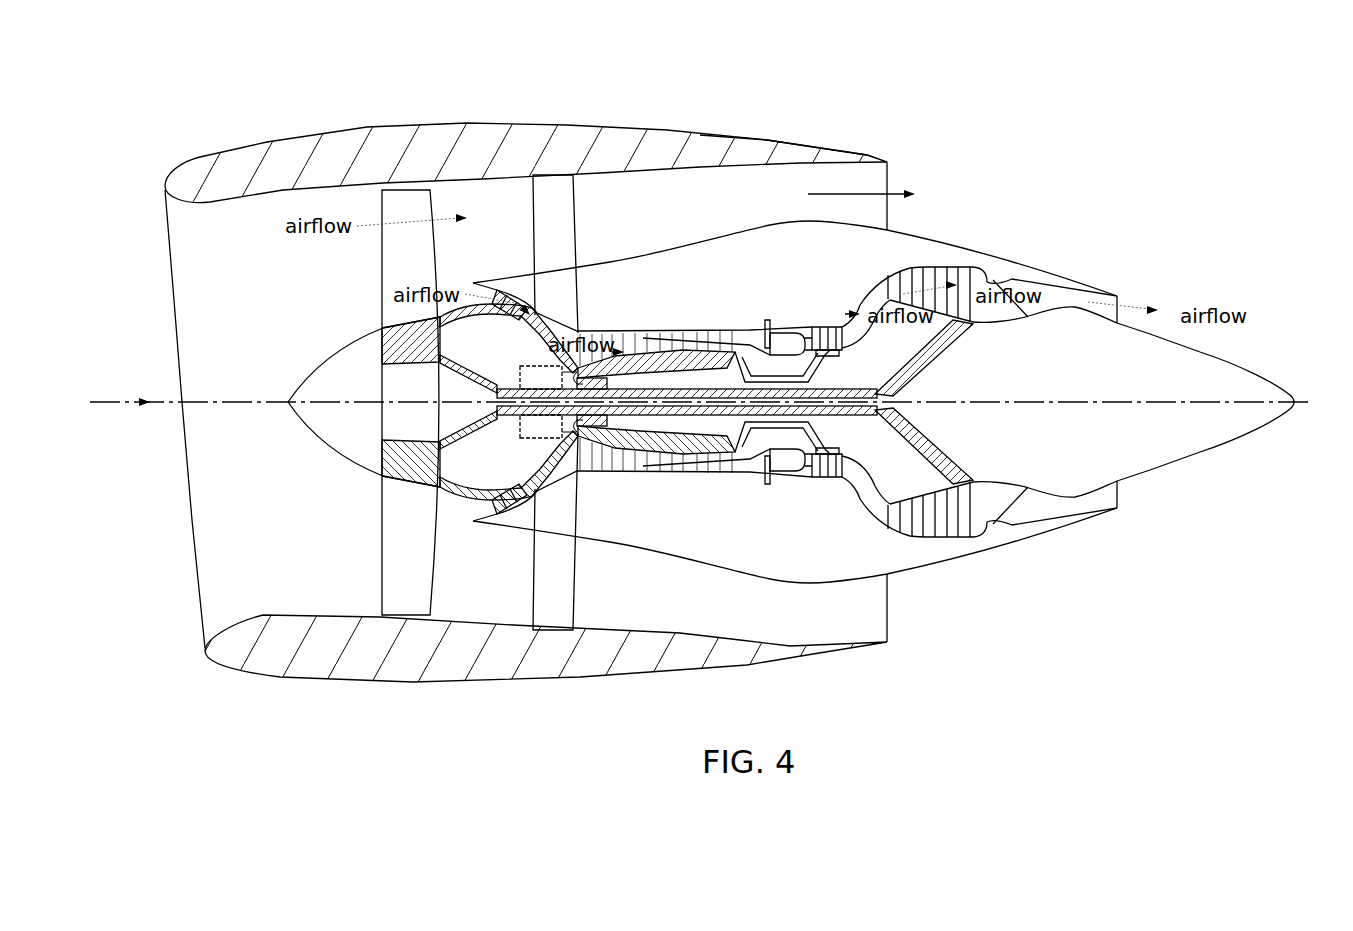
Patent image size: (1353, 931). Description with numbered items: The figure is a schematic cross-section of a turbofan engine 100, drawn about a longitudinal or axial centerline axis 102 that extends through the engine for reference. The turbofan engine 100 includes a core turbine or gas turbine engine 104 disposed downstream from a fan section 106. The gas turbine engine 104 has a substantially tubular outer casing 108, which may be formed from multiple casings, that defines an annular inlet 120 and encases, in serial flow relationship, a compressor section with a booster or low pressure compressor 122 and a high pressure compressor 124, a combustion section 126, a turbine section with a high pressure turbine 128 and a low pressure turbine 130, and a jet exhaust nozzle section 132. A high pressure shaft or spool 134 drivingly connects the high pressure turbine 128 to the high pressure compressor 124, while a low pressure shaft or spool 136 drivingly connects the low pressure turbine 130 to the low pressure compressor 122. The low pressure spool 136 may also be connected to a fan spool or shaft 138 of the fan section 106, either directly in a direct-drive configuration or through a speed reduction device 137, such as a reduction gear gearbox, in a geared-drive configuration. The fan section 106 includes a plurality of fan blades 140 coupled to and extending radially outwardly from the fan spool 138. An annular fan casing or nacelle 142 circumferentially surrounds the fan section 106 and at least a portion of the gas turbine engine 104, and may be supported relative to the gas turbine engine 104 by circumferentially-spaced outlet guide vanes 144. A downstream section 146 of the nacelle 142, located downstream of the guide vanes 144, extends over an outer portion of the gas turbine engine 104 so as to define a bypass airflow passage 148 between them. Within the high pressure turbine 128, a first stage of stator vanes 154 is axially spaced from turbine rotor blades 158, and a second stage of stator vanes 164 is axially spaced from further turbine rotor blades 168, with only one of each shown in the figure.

The turbofan engine 100 is at (990, 160).
The longitudinal or axial centerline axis 102 is at (1050, 399).
The core turbine or gas turbine engine 104 is at (760, 275).
The fan section 106 is at (320, 92).
The outer casing 108 is at (740, 567).
The annular inlet 120 is at (468, 511).
The low pressure (LP) compressor 122 is at (533, 485).
The high pressure (HP) compressor 124 is at (607, 462).
The combustion section 126 is at (777, 480).
The high pressure (HP) turbine 128 is at (860, 472).
The low pressure (LP) turbine 130 is at (972, 540).
The jet exhaust nozzle section 132 is at (1121, 290).
The high pressure (HP) shaft or spool 134 is at (796, 372).
The low pressure (LP) shaft or spool 136 is at (527, 378).
The speed reduction device 137 is at (577, 332).
The fan spool or shaft 138 is at (437, 372).
The fan blades 140 is at (380, 547).
The annular fan casing or nacelle 142 is at (427, 683).
The outlet guide vanes 144 is at (577, 212).
The downstream section of the nacelle 146 is at (790, 136).
The bypass airflow passage 148 is at (787, 203).
The first stage of stator vanes 154 is at (790, 476).
The turbine rotor blades 158 is at (810, 478).
The second stage of stator vanes 164 is at (820, 481).
The turbine rotor blades 168 is at (840, 487).